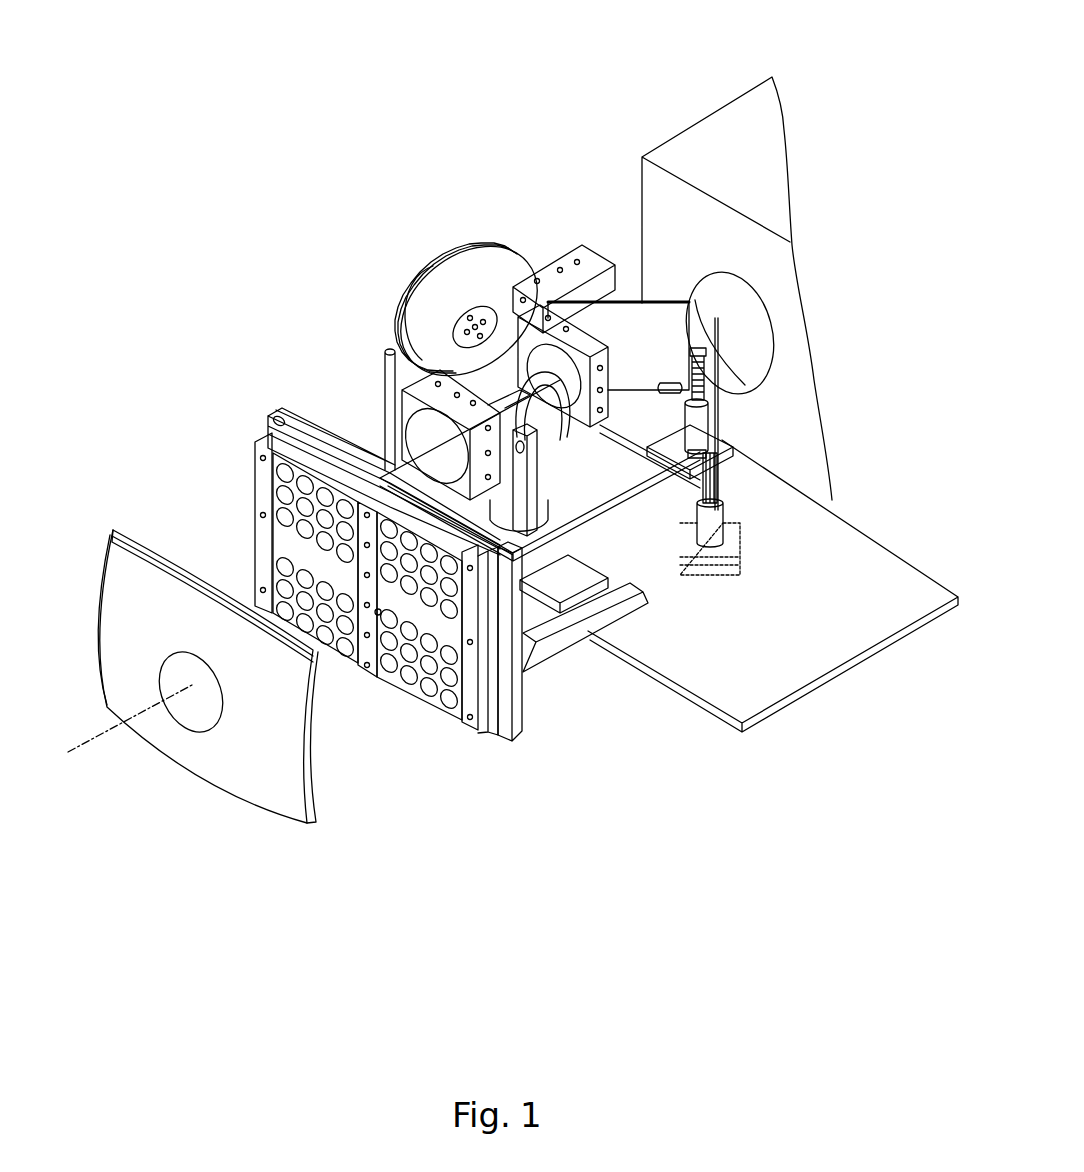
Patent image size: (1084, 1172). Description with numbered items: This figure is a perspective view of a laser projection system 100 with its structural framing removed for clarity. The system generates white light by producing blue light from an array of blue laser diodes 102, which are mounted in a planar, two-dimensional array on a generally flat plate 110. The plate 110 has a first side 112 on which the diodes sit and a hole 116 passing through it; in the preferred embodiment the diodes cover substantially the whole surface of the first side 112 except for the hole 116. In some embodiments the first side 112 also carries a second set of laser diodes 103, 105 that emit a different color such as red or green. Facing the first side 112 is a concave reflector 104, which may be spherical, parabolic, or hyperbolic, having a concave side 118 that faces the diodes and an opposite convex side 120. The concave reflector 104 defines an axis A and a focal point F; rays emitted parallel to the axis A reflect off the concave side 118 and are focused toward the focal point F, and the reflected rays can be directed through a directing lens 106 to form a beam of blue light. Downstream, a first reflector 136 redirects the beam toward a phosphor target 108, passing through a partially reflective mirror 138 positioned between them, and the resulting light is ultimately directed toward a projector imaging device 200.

The laser projection system 100 is at (265, 152).
The blue laser diodes 102 is at (277, 490).
The second set of laser diodes 103 is at (433, 725).
The concave reflector 104 is at (198, 645).
The second set of laser diodes 105 is at (334, 665).
The directing lens 106 is at (263, 580).
The phosphor target 108 is at (527, 248).
The plate 110 is at (296, 410).
The first side 112 is at (485, 735).
The hole 116 is at (375, 500).
The concave side 118 is at (130, 540).
The convex side 120 is at (110, 665).
The first reflector 136 is at (720, 352).
The partially reflective mirror 138 is at (692, 323).
The projector imaging device 200 is at (763, 182).
The axis A is at (95, 733).
The focal point F is at (378, 612).